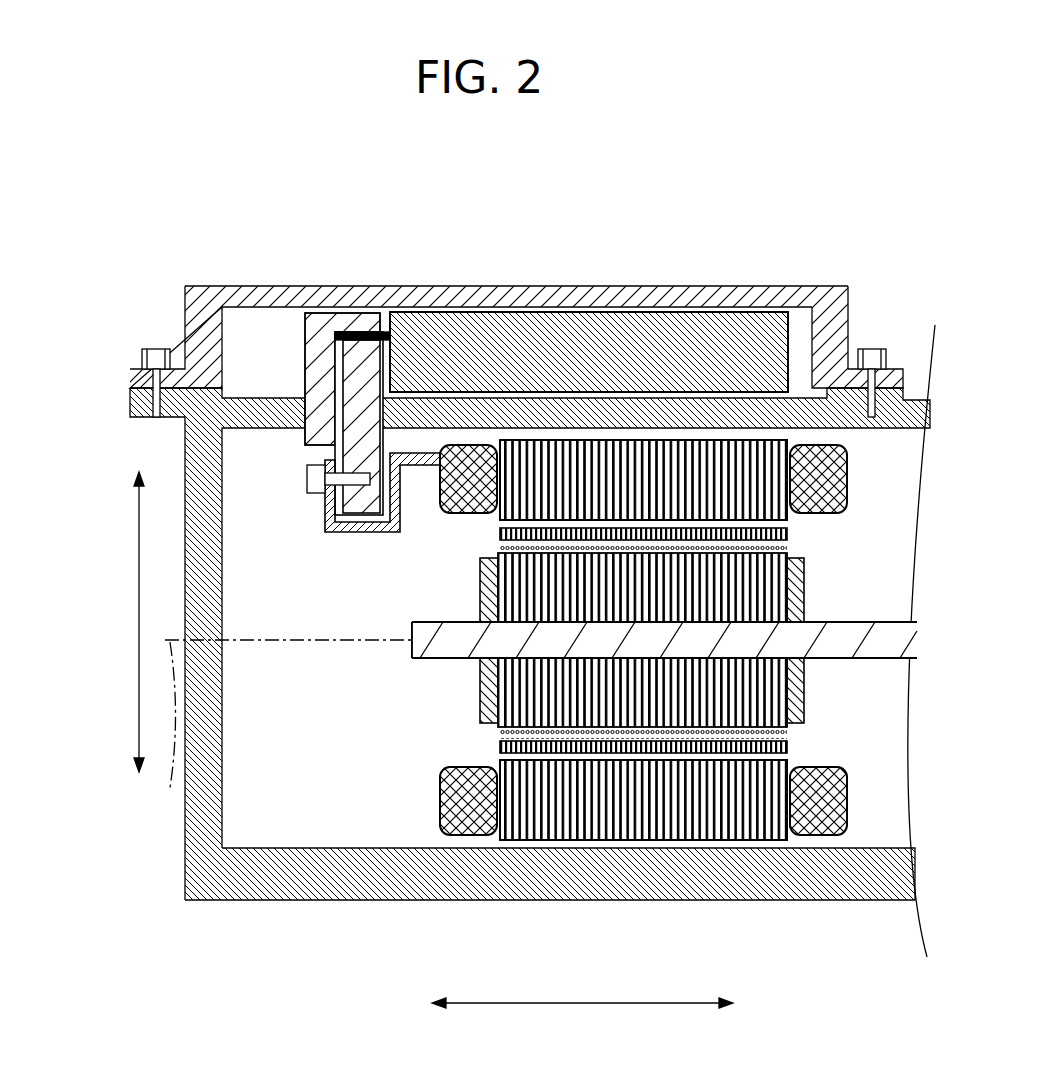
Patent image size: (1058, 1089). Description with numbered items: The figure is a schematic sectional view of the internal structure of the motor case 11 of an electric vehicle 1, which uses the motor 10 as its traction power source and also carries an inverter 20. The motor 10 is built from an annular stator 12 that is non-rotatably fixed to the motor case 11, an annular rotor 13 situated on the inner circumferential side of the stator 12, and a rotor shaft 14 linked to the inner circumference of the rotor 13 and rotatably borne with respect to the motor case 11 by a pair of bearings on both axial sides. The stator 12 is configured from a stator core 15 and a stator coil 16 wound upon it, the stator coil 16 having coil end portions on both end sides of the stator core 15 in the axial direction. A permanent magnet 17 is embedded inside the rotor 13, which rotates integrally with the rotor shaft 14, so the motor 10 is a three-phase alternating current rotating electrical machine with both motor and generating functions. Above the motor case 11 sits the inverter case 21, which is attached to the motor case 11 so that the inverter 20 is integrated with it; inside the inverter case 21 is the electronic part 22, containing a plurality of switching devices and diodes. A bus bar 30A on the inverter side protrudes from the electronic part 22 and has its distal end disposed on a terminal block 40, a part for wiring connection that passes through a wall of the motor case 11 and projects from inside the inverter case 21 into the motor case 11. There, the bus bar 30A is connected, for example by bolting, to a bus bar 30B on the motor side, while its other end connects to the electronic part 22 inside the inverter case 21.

The electric vehicle 1 is at (865, 192).
The motor 10 is at (155, 893).
The motor case 11 is at (270, 900).
The stator 12 is at (853, 242).
The rotor 13 is at (763, 580).
The rotor shaft 14 is at (880, 647).
The stator core 15 is at (737, 457).
The stator coil 16 is at (813, 458).
The permanent magnet 17 is at (778, 545).
The inverter 20 is at (665, 245).
The inverter case 21 is at (219, 286).
The electronic part 22 is at (542, 336).
The bus bar on the inverter side 30A is at (366, 332).
The bus bar on the motor side 30B is at (340, 532).
The terminal block 40 is at (302, 313).